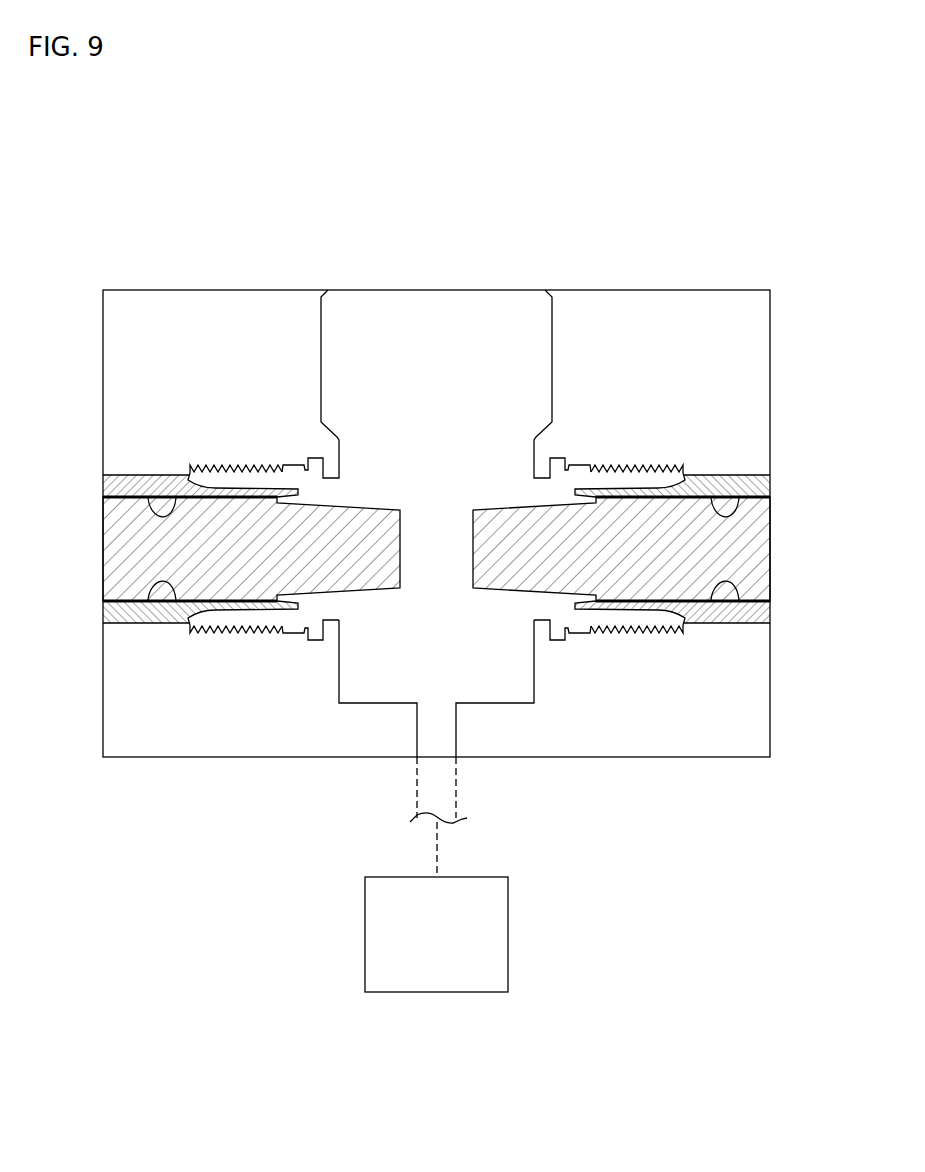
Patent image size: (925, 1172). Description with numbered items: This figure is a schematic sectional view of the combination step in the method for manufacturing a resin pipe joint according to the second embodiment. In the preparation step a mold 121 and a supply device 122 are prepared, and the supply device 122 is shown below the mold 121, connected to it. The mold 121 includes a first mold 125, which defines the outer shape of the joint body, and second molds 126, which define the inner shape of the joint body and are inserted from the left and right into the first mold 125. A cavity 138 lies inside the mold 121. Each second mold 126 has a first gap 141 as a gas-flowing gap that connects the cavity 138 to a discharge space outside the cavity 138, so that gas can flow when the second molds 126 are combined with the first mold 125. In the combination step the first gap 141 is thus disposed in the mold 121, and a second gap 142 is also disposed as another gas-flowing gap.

The mold 121 is at (609, 286).
The supply device 122 is at (365, 937).
The first mold 125 is at (302, 290).
The second mold 126 is at (103, 562).
The cavity 138 is at (507, 680).
The first gap 141 is at (178, 505).
The second gap 142 is at (137, 475).